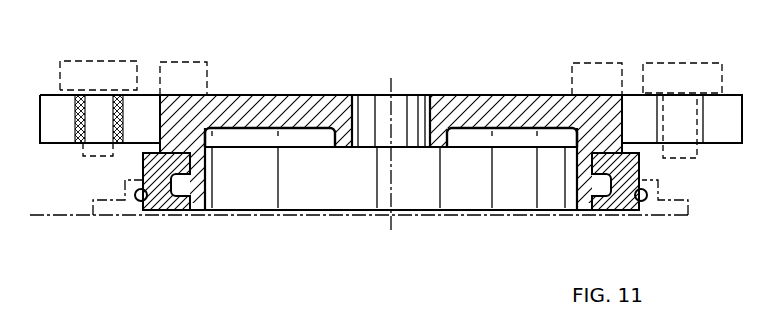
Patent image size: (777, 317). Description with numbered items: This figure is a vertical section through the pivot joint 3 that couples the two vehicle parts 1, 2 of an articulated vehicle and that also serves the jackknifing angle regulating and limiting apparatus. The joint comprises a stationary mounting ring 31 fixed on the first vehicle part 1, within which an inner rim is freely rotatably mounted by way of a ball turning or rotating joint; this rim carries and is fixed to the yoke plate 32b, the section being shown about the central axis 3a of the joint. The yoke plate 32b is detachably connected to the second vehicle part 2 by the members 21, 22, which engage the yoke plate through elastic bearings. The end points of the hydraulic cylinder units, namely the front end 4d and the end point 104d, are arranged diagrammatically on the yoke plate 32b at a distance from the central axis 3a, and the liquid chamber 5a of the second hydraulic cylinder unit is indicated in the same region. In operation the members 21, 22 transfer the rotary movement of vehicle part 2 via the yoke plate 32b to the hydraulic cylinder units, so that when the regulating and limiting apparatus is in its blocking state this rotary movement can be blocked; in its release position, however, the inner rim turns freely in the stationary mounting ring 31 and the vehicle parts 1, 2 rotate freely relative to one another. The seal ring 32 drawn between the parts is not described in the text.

The vehicle part 1 is at (107, 210).
The vehicle part 2 is at (278, 102).
The pivot joint 3 is at (464, 59).
The central axis 3a is at (391, 233).
The front end 4d is at (627, 51).
The liquid chamber 5a is at (180, 60).
The member 21 is at (687, 62).
The member 22 is at (98, 60).
The stationary mounting ring 31 is at (359, 233).
The seal ring 32 is at (178, 208).
The yoke plate 32b is at (391, 92).
The end point 104d is at (592, 62).